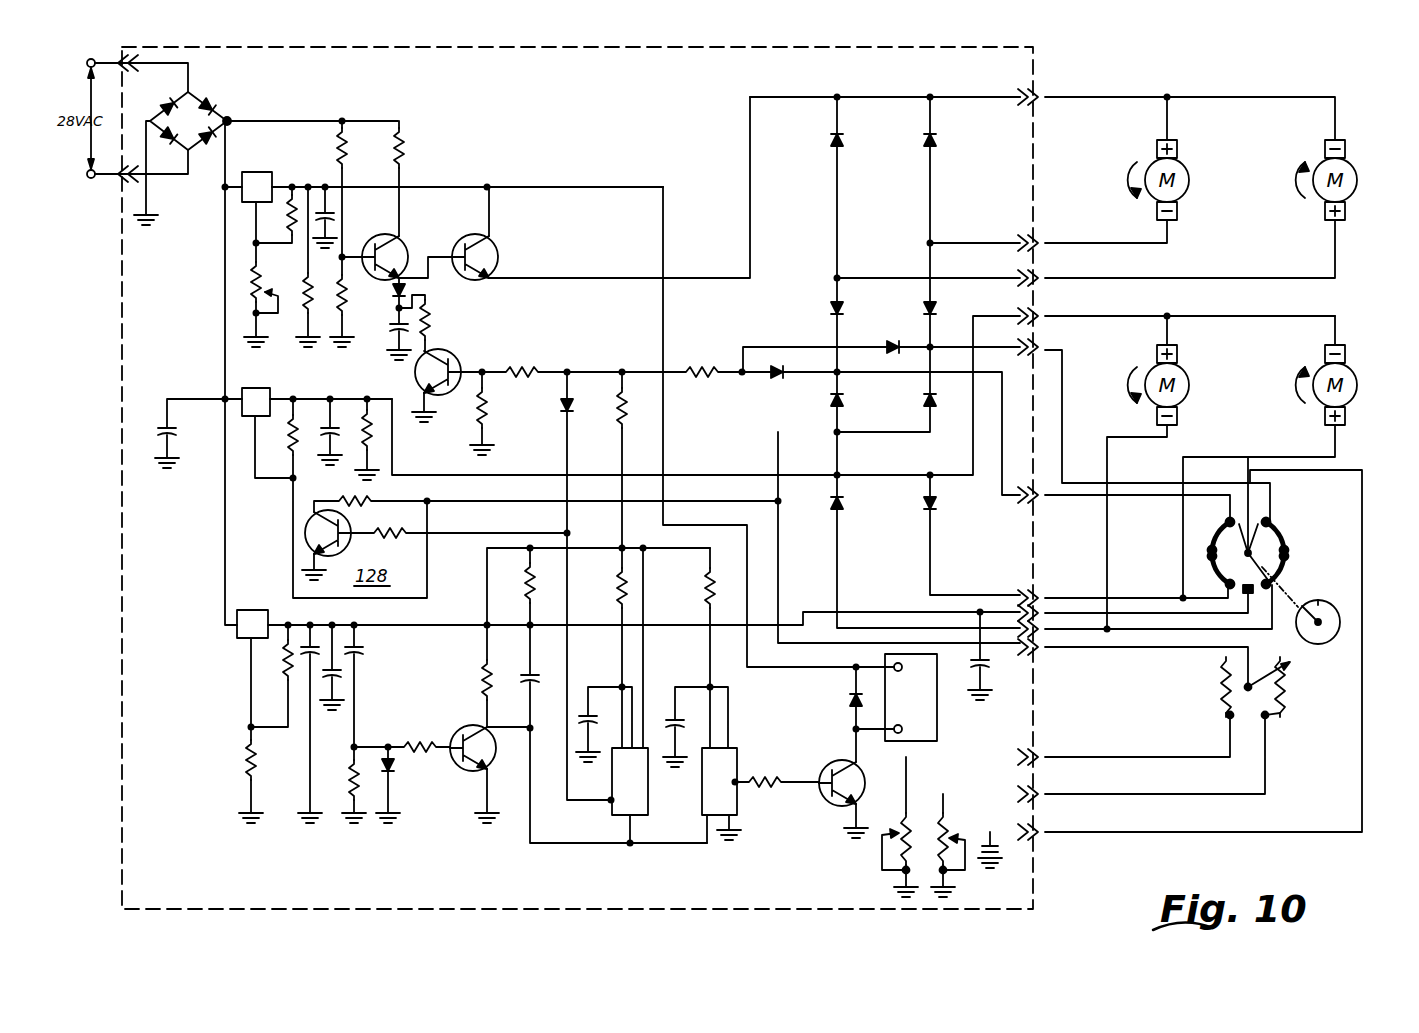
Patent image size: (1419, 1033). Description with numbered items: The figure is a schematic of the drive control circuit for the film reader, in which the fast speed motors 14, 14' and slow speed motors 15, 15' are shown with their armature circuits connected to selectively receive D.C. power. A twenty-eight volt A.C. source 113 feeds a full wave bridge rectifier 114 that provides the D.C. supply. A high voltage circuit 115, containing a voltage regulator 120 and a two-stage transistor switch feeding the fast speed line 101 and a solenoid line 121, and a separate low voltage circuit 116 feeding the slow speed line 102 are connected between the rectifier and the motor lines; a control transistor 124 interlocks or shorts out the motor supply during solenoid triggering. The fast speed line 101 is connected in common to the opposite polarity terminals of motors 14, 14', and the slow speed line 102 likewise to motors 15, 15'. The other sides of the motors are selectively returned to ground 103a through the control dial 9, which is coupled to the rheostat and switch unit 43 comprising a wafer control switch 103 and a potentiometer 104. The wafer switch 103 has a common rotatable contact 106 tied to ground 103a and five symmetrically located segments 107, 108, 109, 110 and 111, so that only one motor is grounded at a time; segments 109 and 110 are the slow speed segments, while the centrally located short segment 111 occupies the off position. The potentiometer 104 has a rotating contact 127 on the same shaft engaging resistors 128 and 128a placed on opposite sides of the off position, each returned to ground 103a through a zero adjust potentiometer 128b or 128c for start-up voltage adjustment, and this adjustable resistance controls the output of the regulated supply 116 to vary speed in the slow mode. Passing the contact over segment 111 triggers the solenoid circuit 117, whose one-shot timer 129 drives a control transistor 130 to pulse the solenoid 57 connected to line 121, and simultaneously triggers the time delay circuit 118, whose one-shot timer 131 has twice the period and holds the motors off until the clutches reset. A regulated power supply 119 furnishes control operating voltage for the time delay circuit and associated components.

The A.C. source 113 is at (165, 97).
The full wave bridge rectifier 114 is at (218, 98).
The voltage regulator 120 is at (281, 178).
The high voltage circuit 115 is at (457, 227).
The solenoid line 121 is at (568, 193).
The control transistor 124 is at (454, 362).
The low voltage circuit 116 is at (274, 531).
The regulated power supply 119 is at (233, 708).
The solenoid circuit 117 is at (815, 727).
The control transistor 130 is at (830, 805).
The one-shot timer 129 is at (738, 805).
The time delay circuit 118 is at (695, 823).
The one-shot timer 131 is at (612, 812).
The solenoid 57 is at (937, 705).
The fast speed line 101 is at (952, 96).
The slow speed line 102 is at (1135, 315).
The fast speed motor 14 is at (1179, 180).
The fast speed motor 14' is at (1348, 180).
The slow speed motor 15 is at (1178, 385).
The slow speed motor 15' is at (1348, 385).
The wafer control switch 103 is at (1242, 556).
The segment 107 is at (1226, 532).
The segment 108 is at (1286, 536).
The slow speed segment 109 is at (1222, 570).
The slow speed segment 110 is at (1290, 566).
The short segment 111 is at (1253, 592).
The common rotatable contact 106 is at (1215, 560).
The rheostat and switch unit 43 is at (1155, 651).
The control dial 9 is at (1323, 644).
The potentiometer 104 is at (1266, 667).
The rotating contact 127 is at (1263, 686).
The potentiometer resistor 128 is at (1210, 700).
The potentiometer resistor 128a is at (1283, 714).
The zero adjust potentiometer 128b is at (907, 812).
The zero adjust potentiometer 128c is at (950, 812).
The ground 103a is at (976, 864).